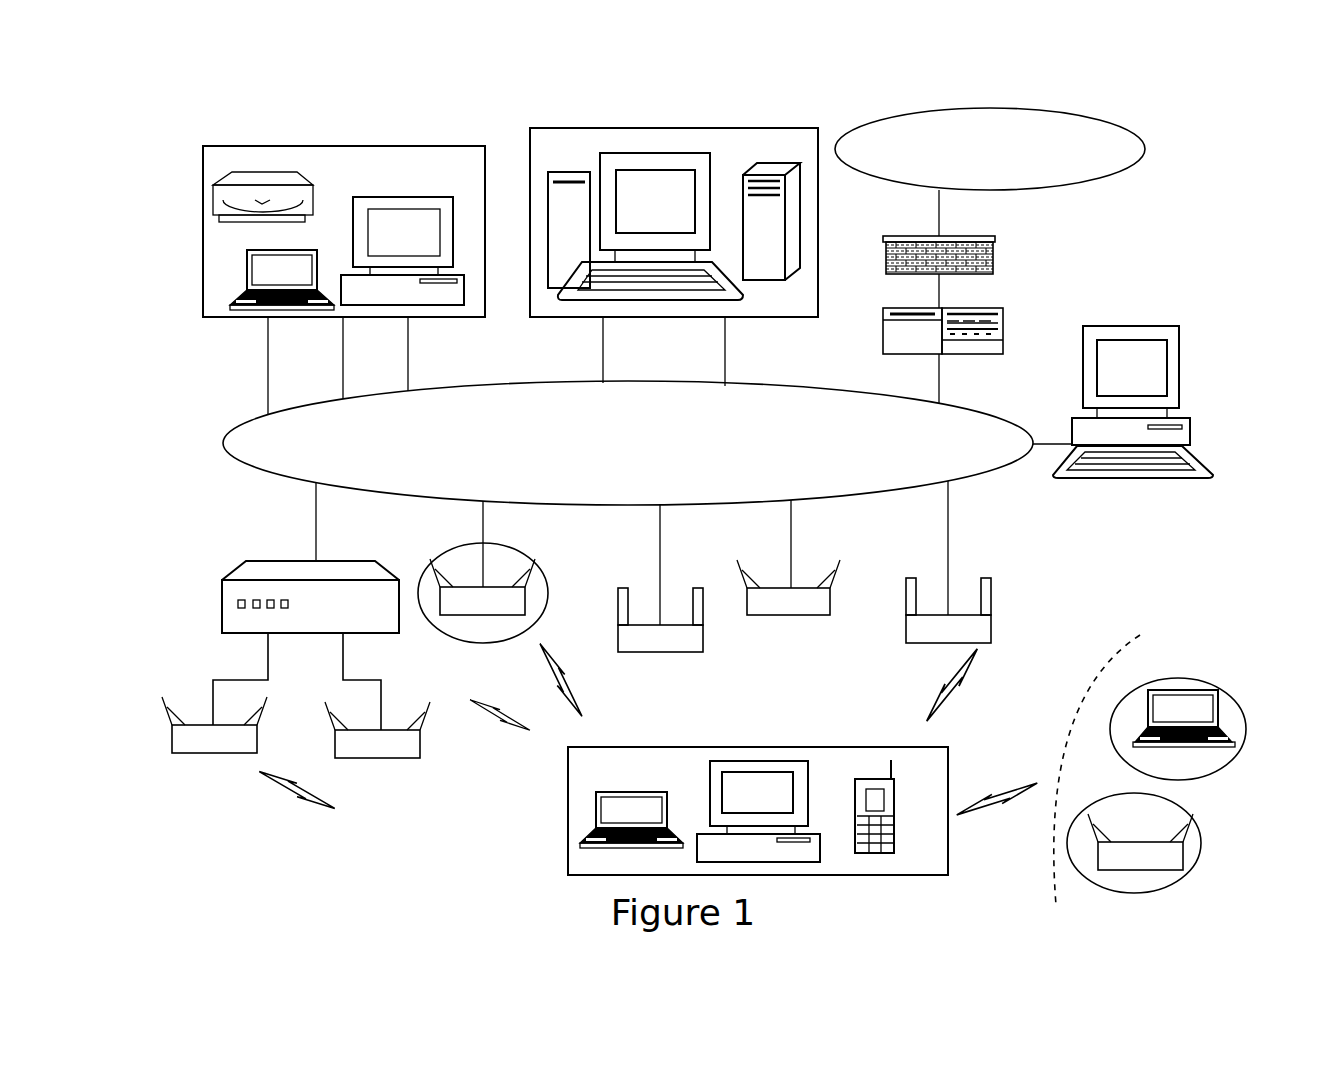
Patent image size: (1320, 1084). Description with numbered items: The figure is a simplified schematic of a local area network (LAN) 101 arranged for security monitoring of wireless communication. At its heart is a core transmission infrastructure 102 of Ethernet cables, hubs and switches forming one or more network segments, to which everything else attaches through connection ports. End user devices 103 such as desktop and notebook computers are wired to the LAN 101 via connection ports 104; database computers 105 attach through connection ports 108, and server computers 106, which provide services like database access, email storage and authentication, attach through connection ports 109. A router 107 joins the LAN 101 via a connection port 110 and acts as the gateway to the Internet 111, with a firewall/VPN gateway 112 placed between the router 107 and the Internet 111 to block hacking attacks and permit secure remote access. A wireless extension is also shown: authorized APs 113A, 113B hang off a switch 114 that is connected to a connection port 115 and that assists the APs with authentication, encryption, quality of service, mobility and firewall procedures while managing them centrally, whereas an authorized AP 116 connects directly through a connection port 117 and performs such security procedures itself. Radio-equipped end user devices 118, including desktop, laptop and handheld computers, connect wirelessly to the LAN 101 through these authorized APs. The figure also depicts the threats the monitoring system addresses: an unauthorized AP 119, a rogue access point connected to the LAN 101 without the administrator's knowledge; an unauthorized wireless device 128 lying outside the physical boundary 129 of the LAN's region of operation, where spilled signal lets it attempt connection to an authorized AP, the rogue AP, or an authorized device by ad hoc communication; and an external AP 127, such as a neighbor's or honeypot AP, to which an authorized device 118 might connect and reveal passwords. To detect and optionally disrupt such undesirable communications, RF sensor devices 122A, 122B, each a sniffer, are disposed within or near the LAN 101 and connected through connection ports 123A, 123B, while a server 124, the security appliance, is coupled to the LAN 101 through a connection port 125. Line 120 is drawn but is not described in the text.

The local area network 101 is at (258, 110).
The core transmission infrastructure 102 is at (240, 426).
The end user devices 103 is at (415, 146).
The connection ports 104 is at (437, 354).
The database computers 105 is at (632, 153).
The server computers 106 is at (762, 163).
The router 107 is at (882, 344).
The connection ports 108 is at (603, 344).
The connection ports 109 is at (725, 344).
The connection port 110 is at (946, 377).
The Internet 111 is at (1143, 130).
The firewall/VPN gateway 112 is at (997, 258).
The authorized AP 113A is at (232, 753).
The authorized AP 113B is at (402, 758).
The switch 114 is at (240, 560).
The connection port 115 is at (316, 516).
The authorized AP 116 is at (818, 615).
The connection port 117 is at (791, 526).
The end user devices 118 is at (884, 747).
The unauthorized AP 119 is at (455, 615).
The connection line 120 is at (483, 533).
The sensor device 122A is at (680, 652).
The sensor device 122B is at (993, 625).
The connection port 123A is at (658, 533).
The connection port 123B is at (948, 533).
The server 124 is at (1166, 326).
The connection port 125 is at (1052, 444).
The external AP 127 is at (1143, 870).
The unauthorized wireless device 128 is at (1177, 690).
The physical boundary 129 is at (1055, 870).